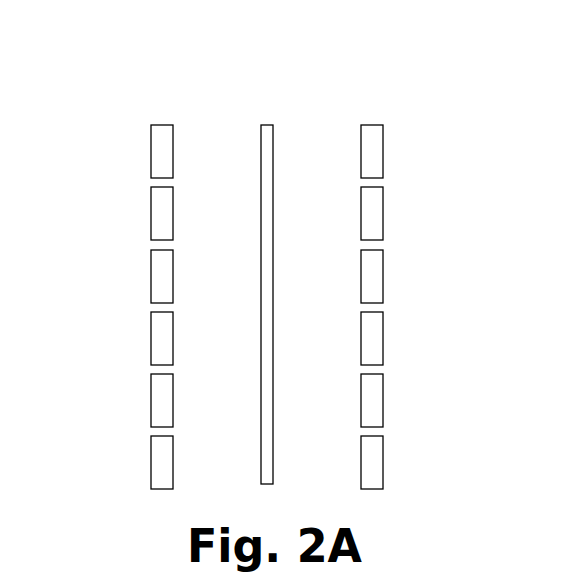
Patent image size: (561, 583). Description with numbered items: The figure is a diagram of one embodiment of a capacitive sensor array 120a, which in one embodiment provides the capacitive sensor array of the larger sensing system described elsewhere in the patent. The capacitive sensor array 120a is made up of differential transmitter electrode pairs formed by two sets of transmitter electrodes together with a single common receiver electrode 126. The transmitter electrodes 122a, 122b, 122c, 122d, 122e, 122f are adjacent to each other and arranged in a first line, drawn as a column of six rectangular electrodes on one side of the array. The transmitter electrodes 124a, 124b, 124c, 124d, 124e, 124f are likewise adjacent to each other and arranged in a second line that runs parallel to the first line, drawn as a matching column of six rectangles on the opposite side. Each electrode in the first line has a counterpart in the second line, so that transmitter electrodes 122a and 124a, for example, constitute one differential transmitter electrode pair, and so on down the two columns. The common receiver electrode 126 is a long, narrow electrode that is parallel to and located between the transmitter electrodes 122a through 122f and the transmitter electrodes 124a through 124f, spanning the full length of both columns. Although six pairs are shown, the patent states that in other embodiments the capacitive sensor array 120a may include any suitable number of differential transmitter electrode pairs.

The capacitive sensor array 120a is at (338, 70).
The common receiver electrode 126 is at (261, 139).
The transmitter electrode 122a is at (151, 153).
The transmitter electrode 122b is at (151, 215).
The transmitter electrode 122c is at (151, 278).
The transmitter electrode 122d is at (151, 340).
The transmitter electrode 122e is at (151, 402).
The transmitter electrode 122f is at (151, 465).
The transmitter electrode 124a is at (383, 151).
The transmitter electrode 124b is at (383, 213).
The transmitter electrode 124c is at (383, 276).
The transmitter electrode 124d is at (383, 338).
The transmitter electrode 124e is at (383, 400).
The transmitter electrode 124f is at (383, 462).